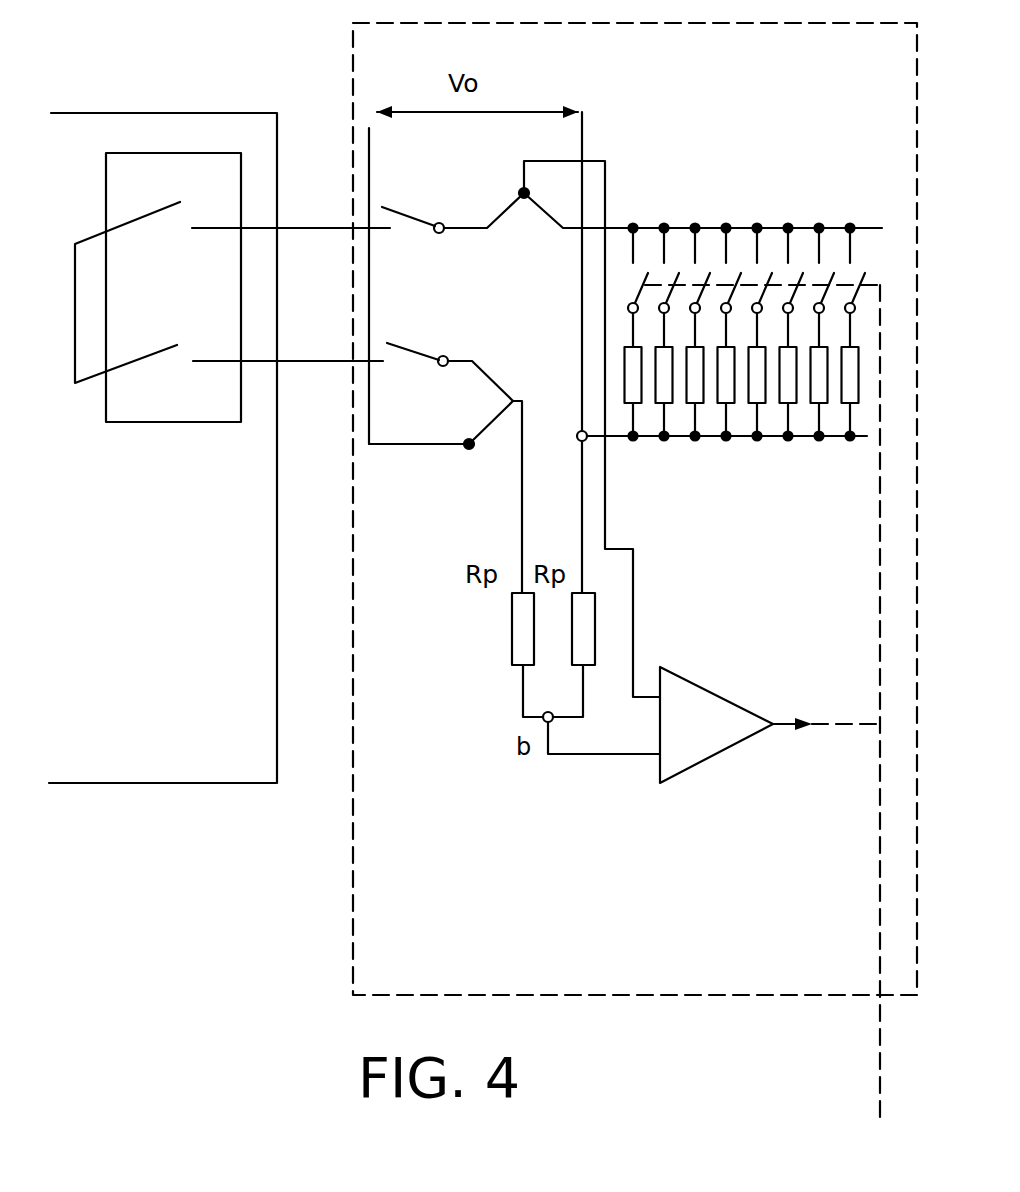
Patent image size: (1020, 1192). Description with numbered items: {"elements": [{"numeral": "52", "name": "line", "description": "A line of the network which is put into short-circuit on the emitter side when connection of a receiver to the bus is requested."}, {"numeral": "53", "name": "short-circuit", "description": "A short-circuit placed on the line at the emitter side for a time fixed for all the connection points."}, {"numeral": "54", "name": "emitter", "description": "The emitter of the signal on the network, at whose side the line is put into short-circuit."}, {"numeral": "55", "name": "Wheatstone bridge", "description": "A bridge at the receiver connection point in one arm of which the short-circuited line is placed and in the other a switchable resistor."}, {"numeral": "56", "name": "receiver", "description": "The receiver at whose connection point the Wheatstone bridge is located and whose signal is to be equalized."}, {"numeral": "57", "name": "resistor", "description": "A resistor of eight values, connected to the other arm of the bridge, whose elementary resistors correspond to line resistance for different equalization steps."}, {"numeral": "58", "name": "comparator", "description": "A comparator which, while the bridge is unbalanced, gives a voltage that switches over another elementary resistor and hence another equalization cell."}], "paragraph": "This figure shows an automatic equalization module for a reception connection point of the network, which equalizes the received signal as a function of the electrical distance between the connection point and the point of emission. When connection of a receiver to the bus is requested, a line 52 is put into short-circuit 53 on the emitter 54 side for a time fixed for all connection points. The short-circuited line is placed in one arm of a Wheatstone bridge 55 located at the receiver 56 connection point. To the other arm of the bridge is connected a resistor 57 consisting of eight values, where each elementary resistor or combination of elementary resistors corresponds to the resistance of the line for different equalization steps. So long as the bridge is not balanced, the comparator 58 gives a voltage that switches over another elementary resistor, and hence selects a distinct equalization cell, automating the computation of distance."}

The emitter 52 is at (257, 362).
The emitter contact 53 is at (83, 375).
The emitter connection point 54 is at (207, 765).
The switch 55 is at (553, 440).
The receiver connection point 56 is at (367, 899).
The resistors 57 is at (755, 397).
The amplifier 58 is at (755, 686).